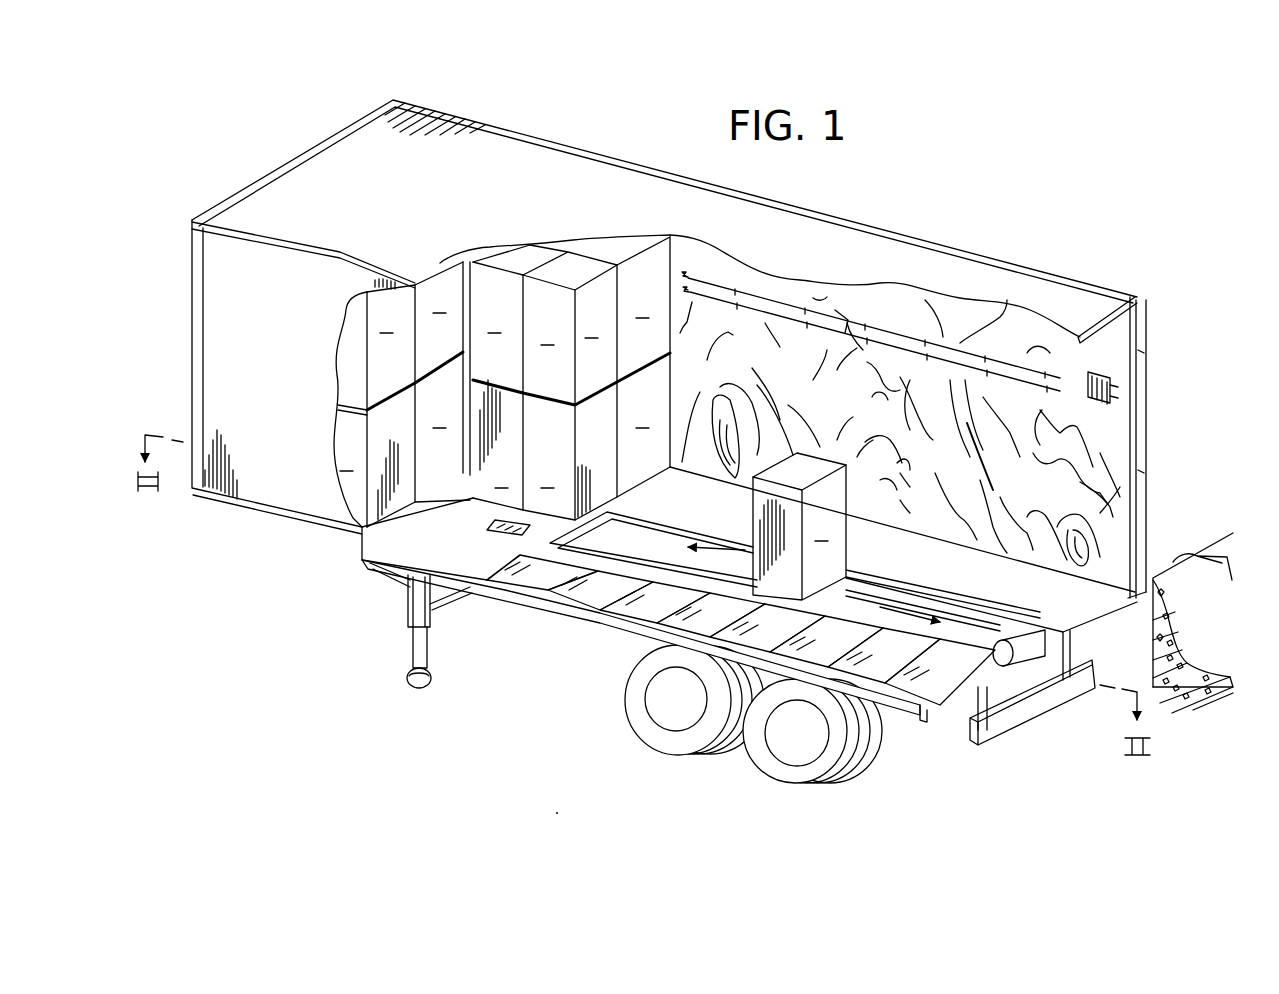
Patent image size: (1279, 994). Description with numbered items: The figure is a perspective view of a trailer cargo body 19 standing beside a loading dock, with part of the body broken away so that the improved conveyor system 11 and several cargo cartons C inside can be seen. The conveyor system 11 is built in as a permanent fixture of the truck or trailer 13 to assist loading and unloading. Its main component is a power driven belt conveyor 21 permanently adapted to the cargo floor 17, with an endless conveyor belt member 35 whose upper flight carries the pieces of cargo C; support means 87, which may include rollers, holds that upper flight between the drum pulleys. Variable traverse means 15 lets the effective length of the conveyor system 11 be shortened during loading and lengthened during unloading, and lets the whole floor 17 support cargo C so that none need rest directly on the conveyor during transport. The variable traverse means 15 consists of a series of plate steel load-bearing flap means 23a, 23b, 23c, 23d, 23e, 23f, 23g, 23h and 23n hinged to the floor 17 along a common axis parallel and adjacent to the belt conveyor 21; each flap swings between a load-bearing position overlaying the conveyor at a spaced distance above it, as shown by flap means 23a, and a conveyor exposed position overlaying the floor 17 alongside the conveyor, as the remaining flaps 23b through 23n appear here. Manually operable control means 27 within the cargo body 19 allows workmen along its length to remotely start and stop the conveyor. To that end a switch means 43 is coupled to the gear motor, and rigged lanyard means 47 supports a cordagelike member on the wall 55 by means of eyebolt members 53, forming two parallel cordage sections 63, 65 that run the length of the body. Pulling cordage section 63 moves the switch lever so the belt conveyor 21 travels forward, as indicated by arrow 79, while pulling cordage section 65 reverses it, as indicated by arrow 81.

The conveyor system 11 is at (1132, 199).
The truck or trailer 13 is at (222, 670).
The variable traverse means 15 is at (1158, 500).
The cargo floor 17 is at (1012, 589).
The cargo body 19 is at (440, 201).
The belt conveyor 21 is at (630, 543).
The load-bearing flap means 23a is at (533, 530).
The load-bearing flap means 23b is at (554, 587).
The load-bearing flap means 23c is at (608, 600).
The load-bearing flap means 23d is at (667, 616).
The load-bearing flap means 23e is at (716, 630).
The load-bearing flap means 23f is at (772, 643).
The load-bearing flap means 23g is at (832, 660).
The load-bearing flap means 23h is at (890, 673).
The load-bearing flap means 23n is at (949, 691).
The control means 27 is at (765, 338).
The endless conveyor belt member 35 is at (1040, 640).
The switch means 43 is at (1105, 358).
The rigged lanyard means 47 is at (1050, 320).
The eyebolt members 53 is at (735, 289).
The wall 55 is at (962, 462).
The cordage section 63 is at (828, 312).
The cordage section 65 is at (823, 322).
The arrow 79 is at (725, 555).
The arrow 81 is at (900, 595).
The support means 87 is at (985, 635).
The cargo C is at (593, 417).